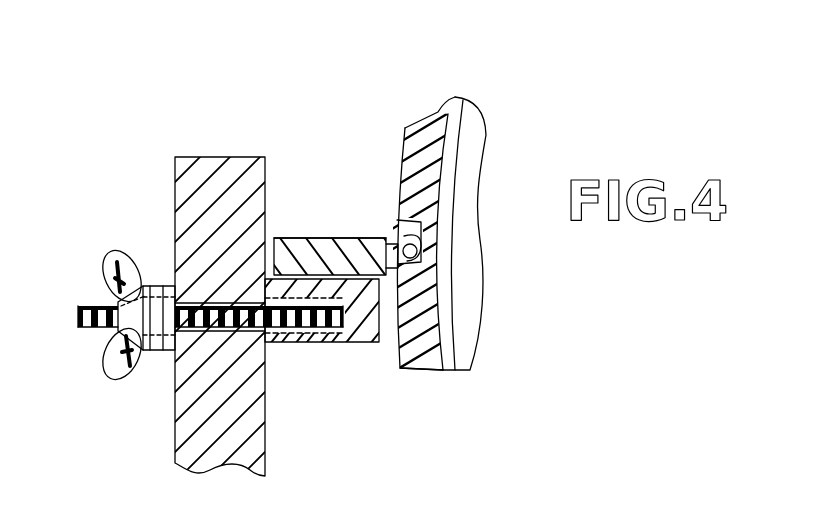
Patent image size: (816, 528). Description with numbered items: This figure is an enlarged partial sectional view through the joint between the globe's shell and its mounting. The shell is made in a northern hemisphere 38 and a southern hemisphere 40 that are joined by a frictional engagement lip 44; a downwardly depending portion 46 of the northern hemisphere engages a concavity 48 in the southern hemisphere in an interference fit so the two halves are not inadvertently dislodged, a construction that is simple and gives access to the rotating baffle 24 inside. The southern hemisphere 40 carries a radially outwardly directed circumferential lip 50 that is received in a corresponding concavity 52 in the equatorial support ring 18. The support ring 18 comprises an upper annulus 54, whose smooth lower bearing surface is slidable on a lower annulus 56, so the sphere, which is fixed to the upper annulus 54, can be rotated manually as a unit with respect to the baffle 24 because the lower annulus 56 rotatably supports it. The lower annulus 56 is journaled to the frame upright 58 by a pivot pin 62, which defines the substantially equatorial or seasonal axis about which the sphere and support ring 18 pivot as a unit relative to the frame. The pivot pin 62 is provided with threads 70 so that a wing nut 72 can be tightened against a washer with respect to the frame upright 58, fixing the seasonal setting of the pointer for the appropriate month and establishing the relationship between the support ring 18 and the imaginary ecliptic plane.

The equatorial support ring 18 is at (307, 359).
The rotating baffle 24 is at (476, 143).
The northern hemisphere 38 is at (437, 110).
The southern hemisphere 40 is at (435, 373).
The frictional engagement lip 44 is at (393, 238).
The downwardly depending portion 46 is at (408, 239).
The concavity 48 is at (418, 273).
The circumferential lip 50 is at (381, 243).
The concavity 52 is at (350, 238).
The upper annulus 54 is at (282, 237).
The lower annulus 56 is at (360, 343).
The frame upright 58 is at (187, 161).
The pivot pin 62 is at (195, 340).
The threads 70 is at (82, 303).
The wing nut 72 is at (132, 262).